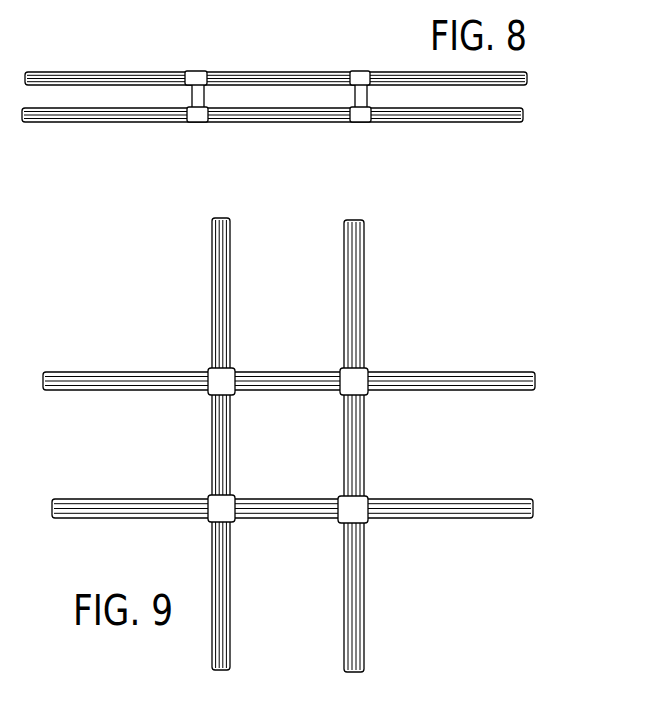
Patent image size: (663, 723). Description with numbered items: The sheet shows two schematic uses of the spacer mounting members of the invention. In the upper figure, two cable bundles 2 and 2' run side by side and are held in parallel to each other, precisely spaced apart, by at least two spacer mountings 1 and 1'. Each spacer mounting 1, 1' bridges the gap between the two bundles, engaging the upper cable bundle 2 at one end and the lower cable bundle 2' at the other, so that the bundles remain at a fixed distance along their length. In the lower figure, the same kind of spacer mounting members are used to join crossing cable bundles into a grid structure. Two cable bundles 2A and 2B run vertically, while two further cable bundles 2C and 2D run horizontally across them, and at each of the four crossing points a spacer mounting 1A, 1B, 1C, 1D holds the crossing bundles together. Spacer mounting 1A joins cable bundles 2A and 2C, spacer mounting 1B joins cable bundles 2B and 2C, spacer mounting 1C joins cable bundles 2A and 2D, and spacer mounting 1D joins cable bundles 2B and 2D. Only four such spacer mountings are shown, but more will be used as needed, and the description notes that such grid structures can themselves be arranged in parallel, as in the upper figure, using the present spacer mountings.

In FIG. 8, the spacer mounting 1 is at (209, 65).
In FIG. 8, the spacer mounting 1' is at (369, 65).
In FIG. 8, the cable bundle 2 is at (276, 47).
In FIG. 8, the cable bundle 2' is at (272, 141).
In FIG. 9, the spacer mounting 1A is at (228, 380).
In FIG. 9, the spacer mounting 1B is at (358, 377).
In FIG. 9, the spacer mounting 1C is at (227, 513).
In FIG. 9, the spacer mounting 1D is at (362, 517).
In FIG. 9, the cable bundle 2A is at (217, 277).
In FIG. 9, the cable bundle 2B is at (365, 278).
In FIG. 9, the cable bundle 2C is at (97, 390).
In FIG. 9, the cable bundle 2D is at (98, 517).